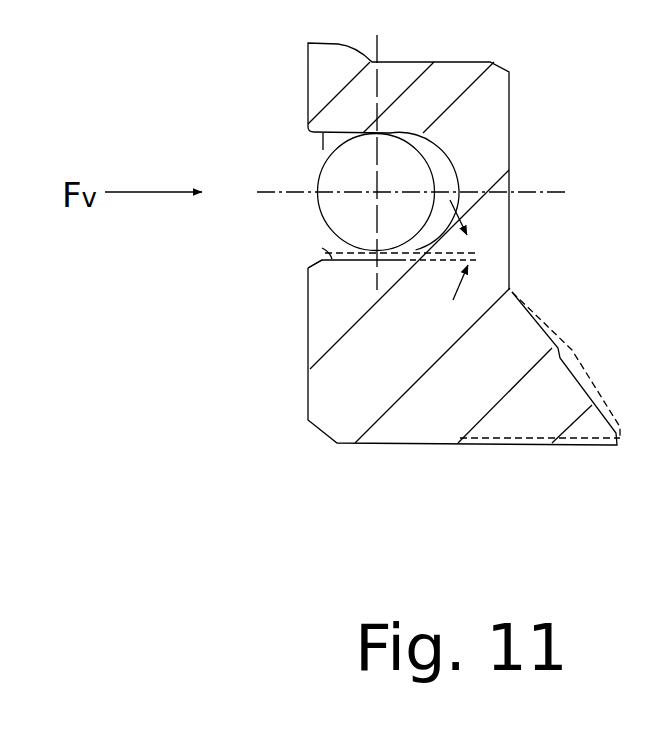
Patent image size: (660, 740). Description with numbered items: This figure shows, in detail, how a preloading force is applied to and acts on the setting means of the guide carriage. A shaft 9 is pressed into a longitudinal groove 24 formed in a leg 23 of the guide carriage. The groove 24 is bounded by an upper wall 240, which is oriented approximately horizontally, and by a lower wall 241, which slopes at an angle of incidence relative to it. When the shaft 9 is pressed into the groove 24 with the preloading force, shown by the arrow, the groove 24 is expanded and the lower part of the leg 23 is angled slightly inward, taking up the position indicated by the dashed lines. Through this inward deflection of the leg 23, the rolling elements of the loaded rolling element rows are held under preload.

The upper wall 240 is at (328, 133).
The shaft 9 is at (417, 177).
The leg 23 is at (362, 397).
The longitudinal groove 24 is at (313, 227).
The lower wall 241 is at (322, 248).